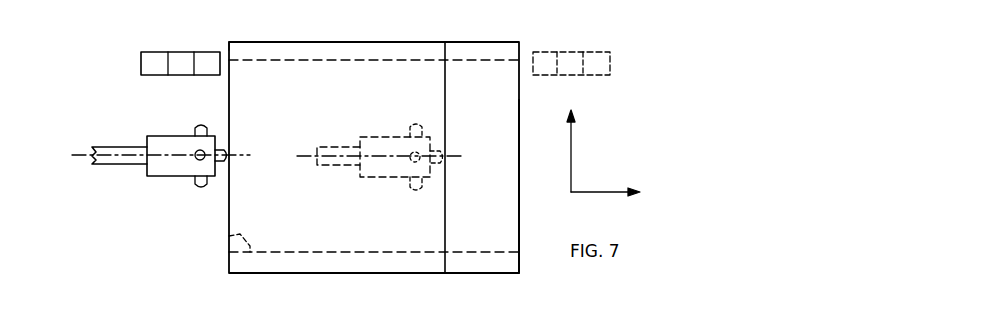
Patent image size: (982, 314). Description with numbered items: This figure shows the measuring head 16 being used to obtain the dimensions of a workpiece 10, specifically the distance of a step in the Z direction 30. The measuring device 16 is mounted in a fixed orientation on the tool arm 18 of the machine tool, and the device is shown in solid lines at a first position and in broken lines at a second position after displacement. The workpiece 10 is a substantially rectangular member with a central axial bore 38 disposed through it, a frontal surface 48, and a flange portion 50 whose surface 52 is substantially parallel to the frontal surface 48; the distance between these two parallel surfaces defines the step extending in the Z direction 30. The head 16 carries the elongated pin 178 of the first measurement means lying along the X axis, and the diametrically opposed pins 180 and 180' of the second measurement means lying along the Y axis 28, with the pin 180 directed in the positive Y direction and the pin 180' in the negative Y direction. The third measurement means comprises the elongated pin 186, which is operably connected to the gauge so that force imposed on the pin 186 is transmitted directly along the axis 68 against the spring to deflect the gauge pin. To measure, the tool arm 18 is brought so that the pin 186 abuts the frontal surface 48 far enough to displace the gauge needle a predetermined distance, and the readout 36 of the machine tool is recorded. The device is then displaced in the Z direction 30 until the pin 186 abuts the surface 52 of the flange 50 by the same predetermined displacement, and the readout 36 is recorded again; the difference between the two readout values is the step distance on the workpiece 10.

The workpiece 10 is at (306, 28).
The measuring head 16 is at (161, 176).
The tool arm 18 is at (110, 147).
The Y axis 28 is at (571, 160).
The Z axis 30 is at (600, 192).
The readout 36 is at (155, 52).
The central axial bore 38 is at (229, 240).
The frontal surface 48 is at (229, 42).
The flange portion 50 is at (519, 232).
The flange surface 52 is at (445, 62).
The axis 68 is at (84, 155).
The elongated pin 178 is at (196, 151).
The elongated pin 180 is at (310, 112).
The elongated pin 180' is at (305, 198).
The elongated pin 186 is at (228, 153).